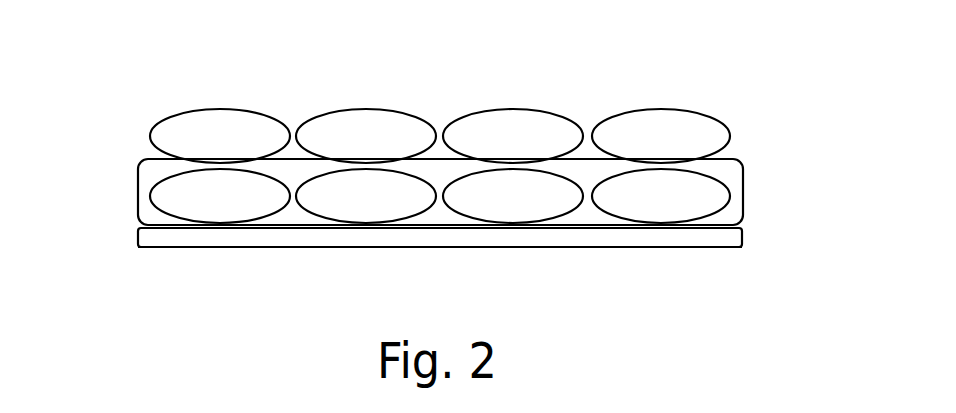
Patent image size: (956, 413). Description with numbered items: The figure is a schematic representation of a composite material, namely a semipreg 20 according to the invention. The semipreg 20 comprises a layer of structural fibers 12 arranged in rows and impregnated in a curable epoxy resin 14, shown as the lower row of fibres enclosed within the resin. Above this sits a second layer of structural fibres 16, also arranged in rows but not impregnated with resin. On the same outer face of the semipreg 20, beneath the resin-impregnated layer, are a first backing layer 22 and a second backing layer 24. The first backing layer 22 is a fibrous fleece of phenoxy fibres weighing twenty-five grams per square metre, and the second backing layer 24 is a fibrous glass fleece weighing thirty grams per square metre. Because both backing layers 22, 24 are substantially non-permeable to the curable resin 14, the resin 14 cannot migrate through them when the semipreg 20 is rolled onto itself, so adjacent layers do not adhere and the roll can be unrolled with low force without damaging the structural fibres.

The structural fibers 12 is at (212, 203).
The curable epoxy resin 14 is at (134, 178).
The second layer of structural fibres 16 is at (144, 132).
The semipreg 20 is at (791, 98).
The first backing layer 22 is at (134, 228).
The second backing layer 24 is at (134, 251).